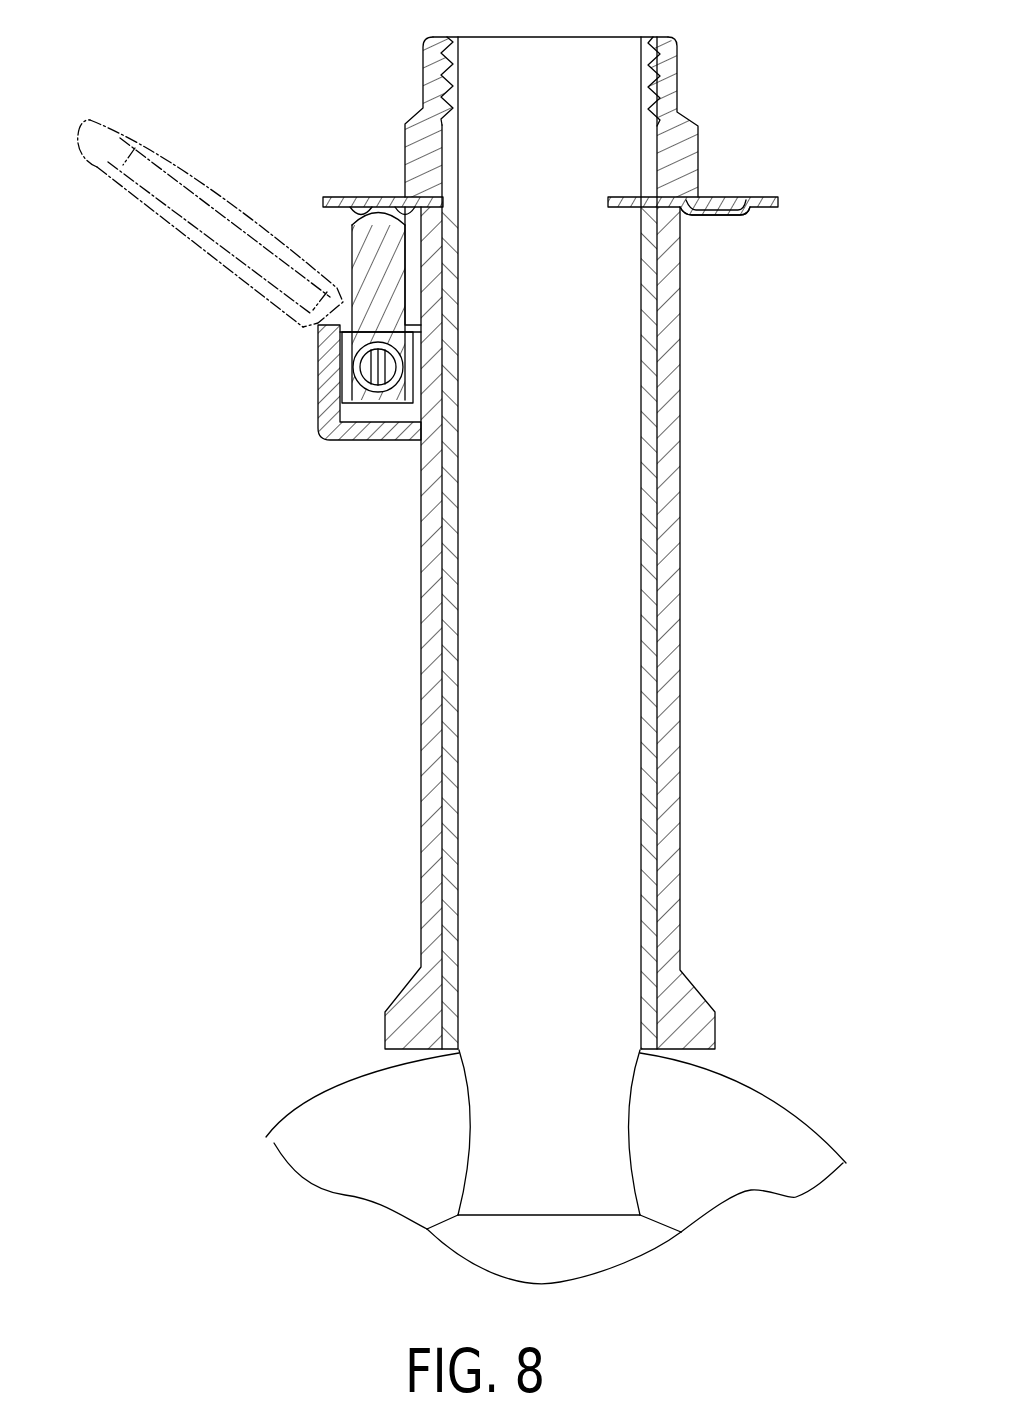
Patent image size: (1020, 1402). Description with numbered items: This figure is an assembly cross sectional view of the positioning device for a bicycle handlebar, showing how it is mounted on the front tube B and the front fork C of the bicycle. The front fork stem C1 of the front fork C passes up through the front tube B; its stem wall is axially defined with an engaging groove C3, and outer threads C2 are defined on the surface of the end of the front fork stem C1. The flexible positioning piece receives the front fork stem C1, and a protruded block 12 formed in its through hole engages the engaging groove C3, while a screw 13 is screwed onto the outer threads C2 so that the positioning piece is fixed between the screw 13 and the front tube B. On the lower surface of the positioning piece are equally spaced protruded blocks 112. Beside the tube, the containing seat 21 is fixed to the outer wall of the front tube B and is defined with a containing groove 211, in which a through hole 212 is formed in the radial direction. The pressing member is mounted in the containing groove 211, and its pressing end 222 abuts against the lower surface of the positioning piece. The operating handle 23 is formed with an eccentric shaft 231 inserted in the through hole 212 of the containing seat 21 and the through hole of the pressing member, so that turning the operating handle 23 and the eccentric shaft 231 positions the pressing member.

The protruded block 12 is at (613, 197).
The protruded blocks 112 is at (717, 215).
The screw 13 is at (412, 137).
The containing seat 21 is at (330, 428).
The containing groove 211 is at (413, 313).
The through hole 212 is at (375, 403).
The pressing end 222 is at (375, 232).
The operating handle 23 is at (148, 197).
The eccentric shaft 231 is at (370, 370).
The front tube B is at (673, 592).
The front fork C is at (790, 1068).
The front fork stem C1 is at (651, 703).
The outer threads C2 is at (447, 66).
The engaging groove C3 is at (647, 158).